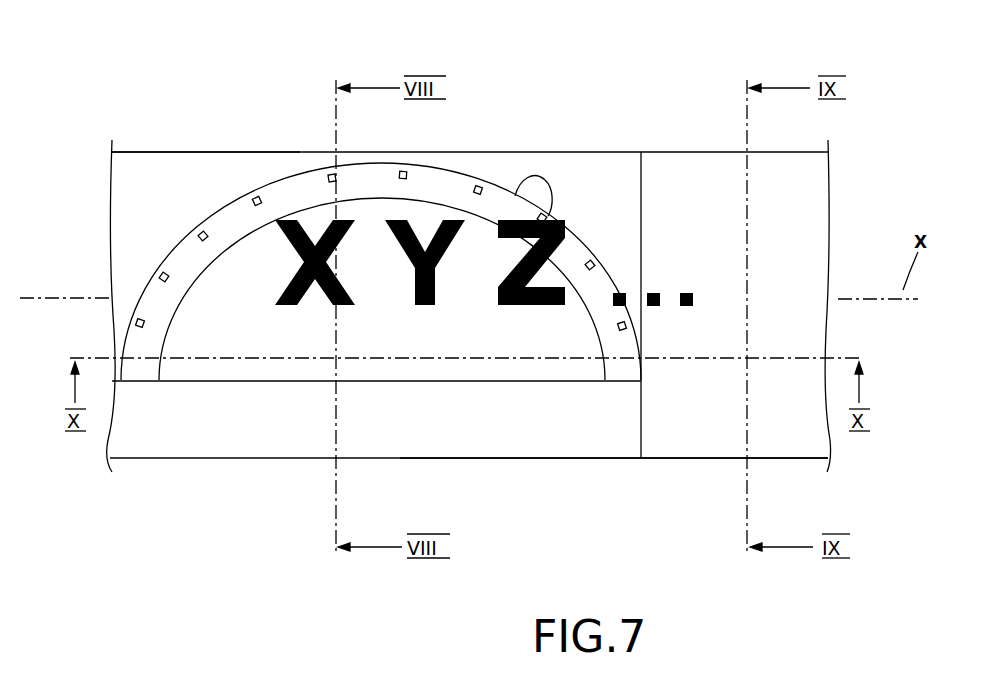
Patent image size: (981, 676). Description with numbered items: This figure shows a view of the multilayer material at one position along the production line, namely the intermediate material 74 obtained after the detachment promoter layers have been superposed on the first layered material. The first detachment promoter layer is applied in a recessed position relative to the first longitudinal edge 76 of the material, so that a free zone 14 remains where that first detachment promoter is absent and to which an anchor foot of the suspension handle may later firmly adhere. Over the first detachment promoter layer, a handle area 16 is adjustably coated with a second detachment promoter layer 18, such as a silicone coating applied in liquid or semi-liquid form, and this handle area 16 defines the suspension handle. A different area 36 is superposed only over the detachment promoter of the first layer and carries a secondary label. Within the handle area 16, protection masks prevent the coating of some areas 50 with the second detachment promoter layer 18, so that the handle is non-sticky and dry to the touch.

The free zone 14 is at (217, 436).
The handle area 16 is at (290, 178).
The second detachment promoter layer 18 is at (440, 186).
The different area 36 is at (708, 430).
The areas below the second front layer 50 is at (496, 190).
The intermediate material 74 is at (175, 146).
The first longitudinal edge 76 is at (532, 461).